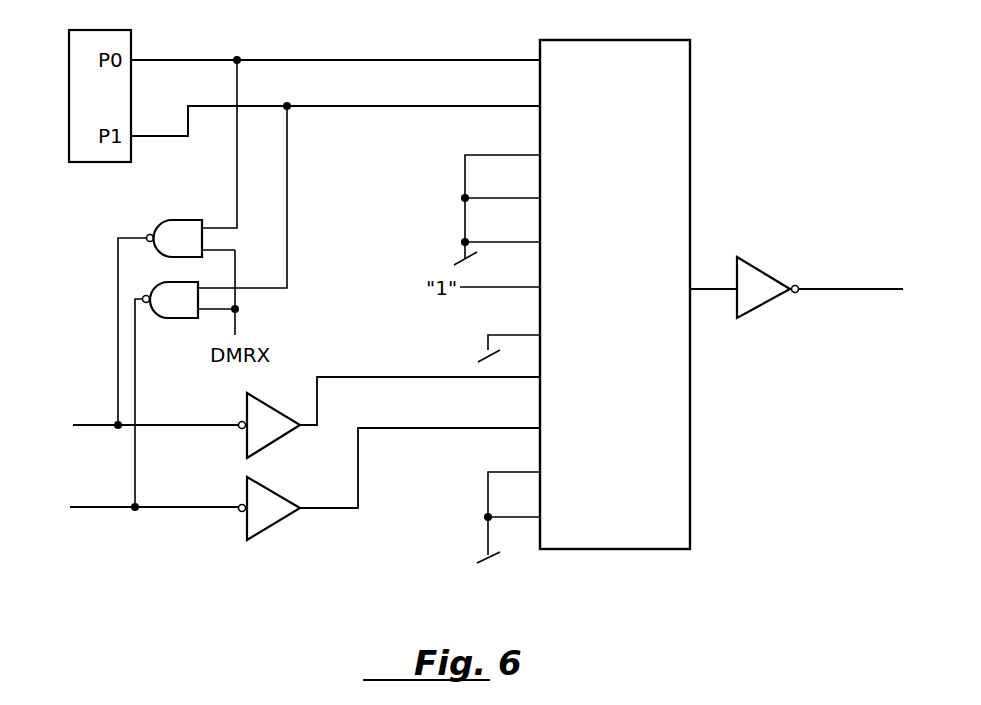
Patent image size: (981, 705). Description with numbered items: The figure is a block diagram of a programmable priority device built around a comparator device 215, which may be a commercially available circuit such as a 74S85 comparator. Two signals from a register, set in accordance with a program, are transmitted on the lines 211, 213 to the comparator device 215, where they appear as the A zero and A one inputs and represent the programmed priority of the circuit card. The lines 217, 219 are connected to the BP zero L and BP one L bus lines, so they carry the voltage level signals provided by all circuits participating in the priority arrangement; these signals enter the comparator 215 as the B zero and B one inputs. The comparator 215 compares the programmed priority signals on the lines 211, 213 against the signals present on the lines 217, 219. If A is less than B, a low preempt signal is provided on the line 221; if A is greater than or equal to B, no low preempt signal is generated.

The line 211 is at (203, 59).
The line 213 is at (153, 135).
The comparator device 215 is at (677, 110).
The line 217 is at (90, 422).
The line 219 is at (100, 510).
The line 221 is at (850, 291).